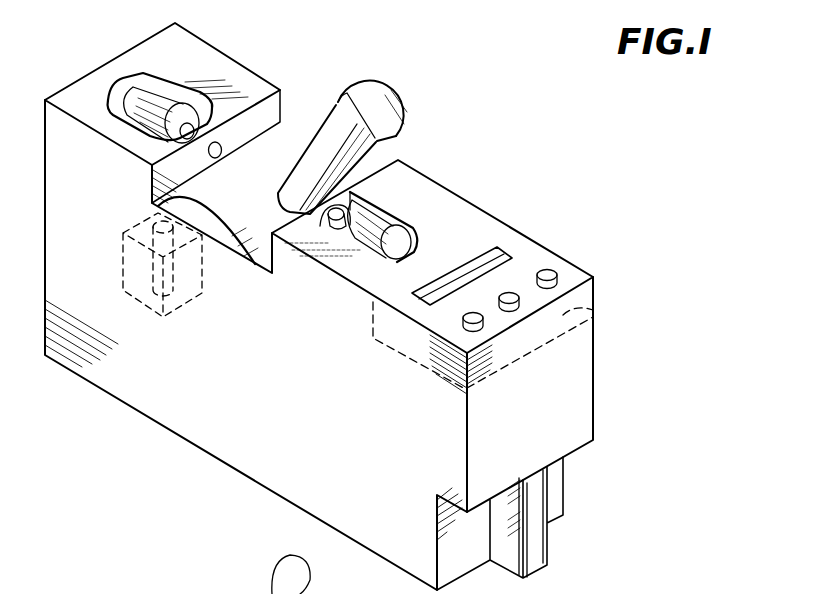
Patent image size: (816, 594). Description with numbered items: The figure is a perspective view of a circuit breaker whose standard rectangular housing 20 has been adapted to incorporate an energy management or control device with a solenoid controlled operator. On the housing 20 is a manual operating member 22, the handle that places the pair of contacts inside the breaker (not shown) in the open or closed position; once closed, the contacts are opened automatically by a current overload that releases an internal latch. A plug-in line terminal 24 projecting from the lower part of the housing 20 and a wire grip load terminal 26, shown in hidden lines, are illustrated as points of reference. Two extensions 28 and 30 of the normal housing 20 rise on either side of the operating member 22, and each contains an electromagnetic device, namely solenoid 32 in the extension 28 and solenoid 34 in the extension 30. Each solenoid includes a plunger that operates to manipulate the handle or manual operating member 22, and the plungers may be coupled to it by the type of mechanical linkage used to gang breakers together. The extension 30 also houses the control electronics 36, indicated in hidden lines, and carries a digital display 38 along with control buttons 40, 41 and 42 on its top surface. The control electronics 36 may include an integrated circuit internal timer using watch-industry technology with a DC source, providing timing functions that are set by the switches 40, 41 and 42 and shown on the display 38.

The housing 20 is at (593, 393).
The manual operating member 22 is at (393, 100).
The plug-in line terminal 24 is at (543, 502).
The wire grip load terminal 26 is at (120, 257).
The extension 28 is at (195, 45).
The extension 30 is at (543, 257).
The solenoid 32 is at (138, 95).
The solenoid 34 is at (380, 227).
The control electronics 36 is at (593, 312).
The digital display 38 is at (500, 247).
The control button 40 is at (556, 273).
The control button 41 is at (518, 304).
The control button 42 is at (477, 323).